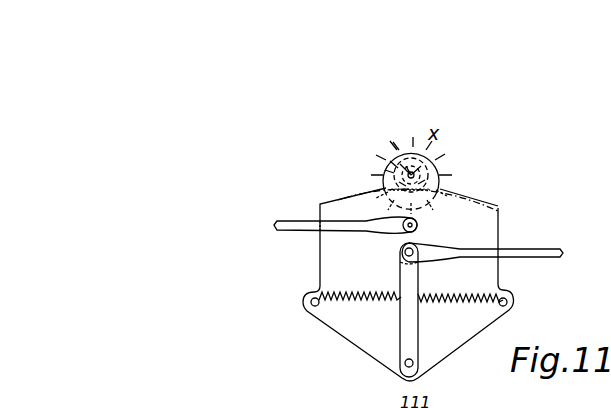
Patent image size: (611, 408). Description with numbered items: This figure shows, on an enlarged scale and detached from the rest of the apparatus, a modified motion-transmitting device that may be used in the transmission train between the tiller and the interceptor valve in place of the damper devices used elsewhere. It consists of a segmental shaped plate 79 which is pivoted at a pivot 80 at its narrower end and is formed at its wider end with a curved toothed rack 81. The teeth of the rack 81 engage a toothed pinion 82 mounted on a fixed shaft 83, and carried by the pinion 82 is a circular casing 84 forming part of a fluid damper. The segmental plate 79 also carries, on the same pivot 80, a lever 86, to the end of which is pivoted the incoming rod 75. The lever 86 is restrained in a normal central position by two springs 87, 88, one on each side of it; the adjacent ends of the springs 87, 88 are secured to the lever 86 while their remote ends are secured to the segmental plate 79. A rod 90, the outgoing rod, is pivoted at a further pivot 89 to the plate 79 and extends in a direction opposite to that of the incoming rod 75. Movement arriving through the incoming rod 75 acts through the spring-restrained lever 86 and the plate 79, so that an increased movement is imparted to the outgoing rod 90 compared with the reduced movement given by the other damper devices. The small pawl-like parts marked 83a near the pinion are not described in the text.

The incoming rod 75 is at (522, 256).
The segmental shaped plate 79 is at (455, 214).
The pivot 80 is at (406, 361).
The curved toothed rack 81 is at (343, 202).
The toothed pinion 82 is at (414, 173).
The fixed shaft 83 is at (391, 161).
The pawl 83a is at (386, 170).
The circular casing 84 is at (399, 148).
The lever 86 is at (412, 330).
The spring 87 is at (366, 300).
The spring 88 is at (455, 293).
The pivot 89 is at (418, 225).
The outgoing rod 90 is at (305, 230).